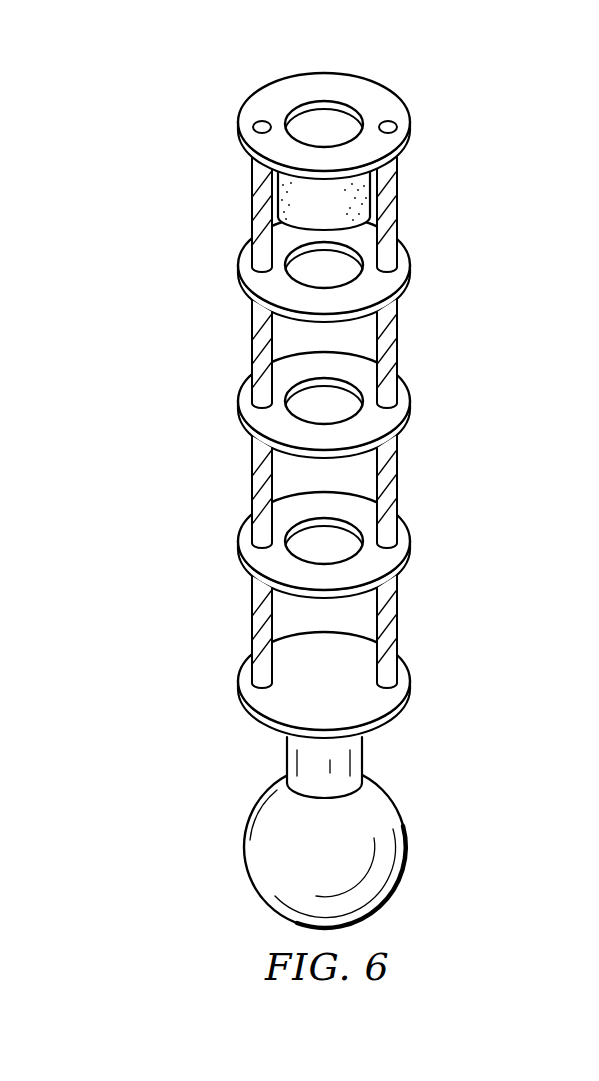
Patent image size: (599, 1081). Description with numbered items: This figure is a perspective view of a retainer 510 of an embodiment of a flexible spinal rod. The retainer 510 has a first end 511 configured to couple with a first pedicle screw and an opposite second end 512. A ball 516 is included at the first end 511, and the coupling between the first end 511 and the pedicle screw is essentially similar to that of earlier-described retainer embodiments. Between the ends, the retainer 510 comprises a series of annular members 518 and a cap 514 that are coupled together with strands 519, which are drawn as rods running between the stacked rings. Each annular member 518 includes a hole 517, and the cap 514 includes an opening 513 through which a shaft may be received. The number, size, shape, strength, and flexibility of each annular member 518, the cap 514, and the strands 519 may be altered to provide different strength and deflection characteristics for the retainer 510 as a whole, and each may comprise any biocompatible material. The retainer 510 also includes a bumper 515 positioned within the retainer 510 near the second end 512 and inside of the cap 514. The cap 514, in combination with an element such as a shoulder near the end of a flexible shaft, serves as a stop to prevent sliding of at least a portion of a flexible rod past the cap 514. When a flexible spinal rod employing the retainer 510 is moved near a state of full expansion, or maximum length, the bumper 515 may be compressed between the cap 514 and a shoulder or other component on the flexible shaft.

The retainer 510 is at (263, 476).
The first end 511 is at (363, 752).
The second end 512 is at (397, 183).
The opening 513 is at (305, 140).
The cap 514 is at (331, 101).
The bumper 515 is at (300, 222).
The ball 516 is at (407, 853).
The hole 517 is at (322, 405).
The annular members 518 is at (410, 272).
The strands 519 is at (398, 350).